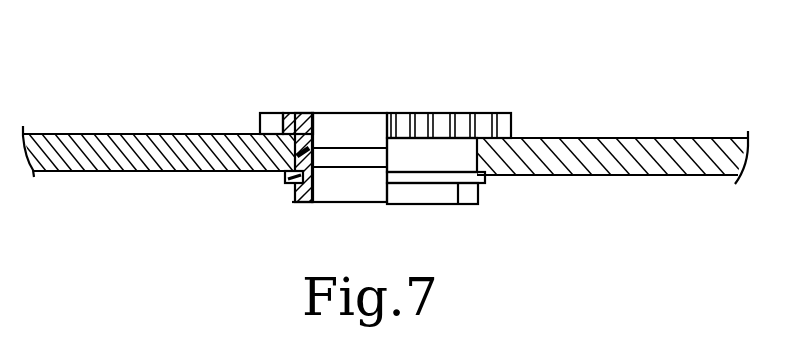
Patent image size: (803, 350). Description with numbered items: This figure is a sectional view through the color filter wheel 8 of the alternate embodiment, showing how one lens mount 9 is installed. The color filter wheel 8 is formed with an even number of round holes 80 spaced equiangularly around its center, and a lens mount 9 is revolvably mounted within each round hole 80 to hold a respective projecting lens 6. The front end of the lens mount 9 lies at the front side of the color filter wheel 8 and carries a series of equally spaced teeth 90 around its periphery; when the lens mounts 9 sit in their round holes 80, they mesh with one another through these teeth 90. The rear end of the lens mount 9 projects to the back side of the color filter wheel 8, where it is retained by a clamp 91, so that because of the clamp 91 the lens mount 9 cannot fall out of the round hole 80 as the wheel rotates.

The projecting lens 6 is at (358, 164).
The color filter wheel 8 is at (622, 155).
The lens mount 9 is at (295, 127).
The teeth 90 is at (272, 123).
The clamp 91 is at (458, 204).
The round hole 80 is at (283, 172).